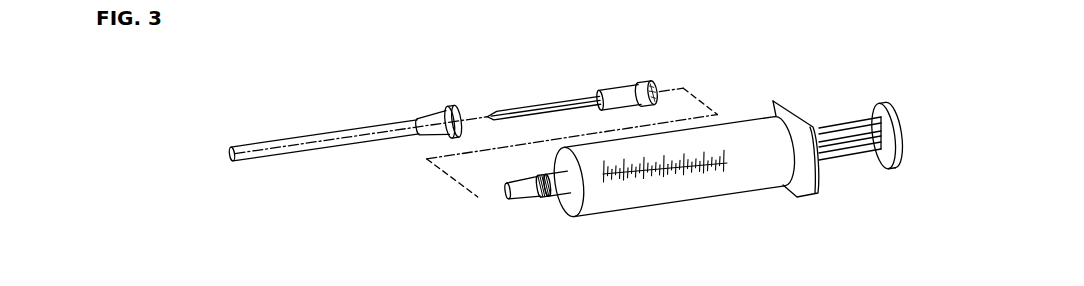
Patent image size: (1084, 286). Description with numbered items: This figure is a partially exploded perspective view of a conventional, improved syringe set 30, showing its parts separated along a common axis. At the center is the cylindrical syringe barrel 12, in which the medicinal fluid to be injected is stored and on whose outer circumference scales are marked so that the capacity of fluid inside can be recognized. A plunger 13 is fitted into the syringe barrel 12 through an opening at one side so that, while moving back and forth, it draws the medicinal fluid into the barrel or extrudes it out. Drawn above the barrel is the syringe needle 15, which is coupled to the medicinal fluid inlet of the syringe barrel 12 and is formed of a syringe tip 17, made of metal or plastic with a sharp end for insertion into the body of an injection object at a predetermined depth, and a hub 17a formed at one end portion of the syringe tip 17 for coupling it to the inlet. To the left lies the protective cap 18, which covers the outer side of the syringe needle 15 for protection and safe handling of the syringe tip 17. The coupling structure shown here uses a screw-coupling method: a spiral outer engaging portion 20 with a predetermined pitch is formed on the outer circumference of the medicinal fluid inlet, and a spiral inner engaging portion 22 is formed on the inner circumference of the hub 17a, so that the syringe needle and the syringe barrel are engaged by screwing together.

The syringe kit 30 is at (433, 55).
The syringe barrel 12 is at (744, 177).
The plunger 13 is at (852, 147).
The syringe needle 15 is at (564, 72).
The syringe tip 17 is at (540, 111).
The hub 17a is at (614, 89).
The protective cap 18 is at (391, 130).
The spiral outer engaging portion 20 is at (545, 174).
The spiral inner engaging portion 22 is at (657, 90).